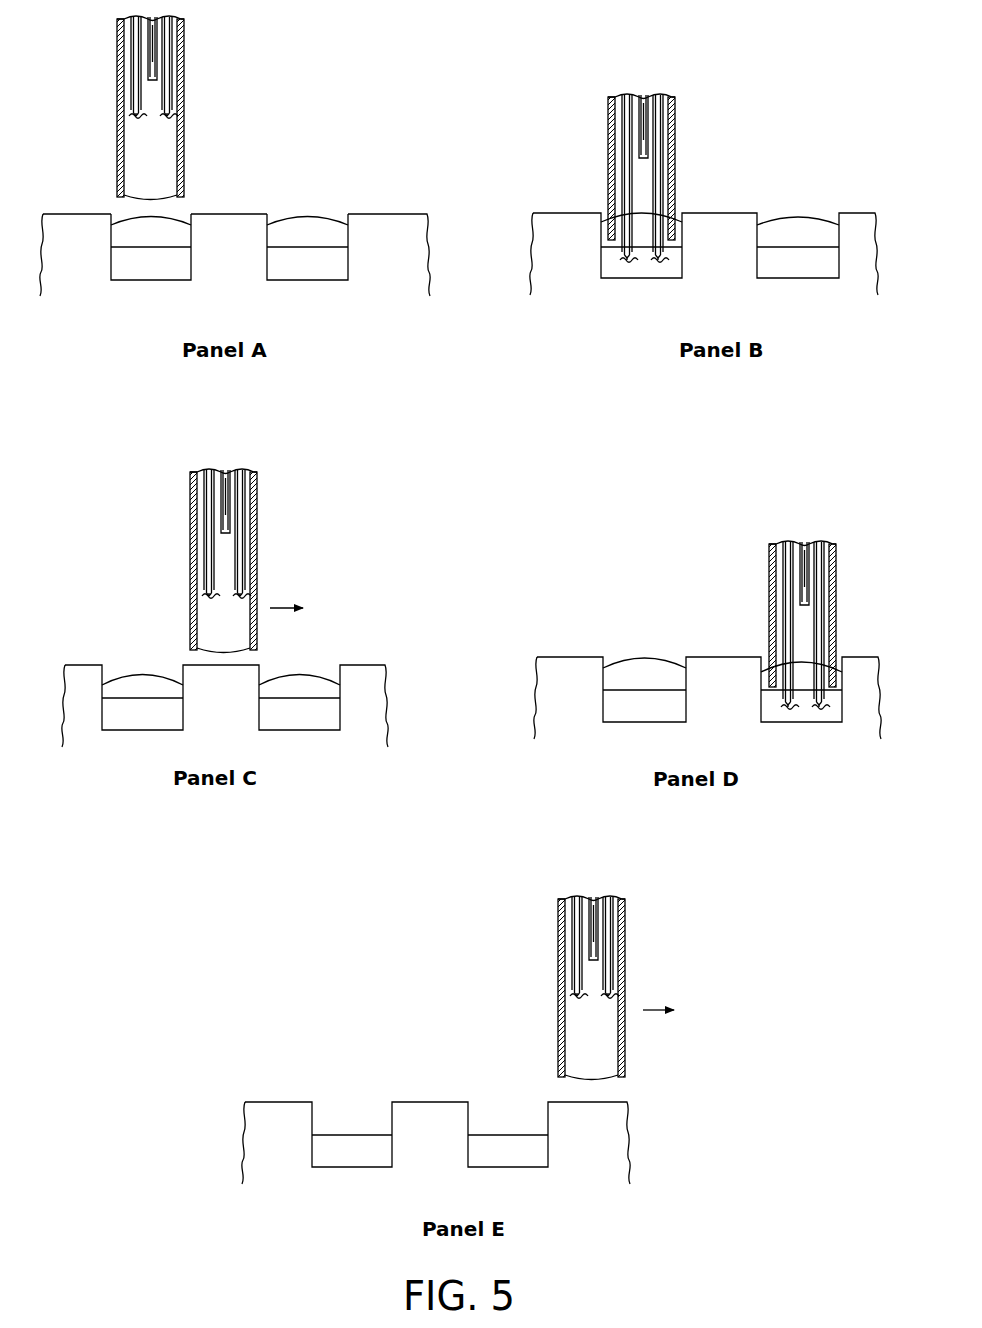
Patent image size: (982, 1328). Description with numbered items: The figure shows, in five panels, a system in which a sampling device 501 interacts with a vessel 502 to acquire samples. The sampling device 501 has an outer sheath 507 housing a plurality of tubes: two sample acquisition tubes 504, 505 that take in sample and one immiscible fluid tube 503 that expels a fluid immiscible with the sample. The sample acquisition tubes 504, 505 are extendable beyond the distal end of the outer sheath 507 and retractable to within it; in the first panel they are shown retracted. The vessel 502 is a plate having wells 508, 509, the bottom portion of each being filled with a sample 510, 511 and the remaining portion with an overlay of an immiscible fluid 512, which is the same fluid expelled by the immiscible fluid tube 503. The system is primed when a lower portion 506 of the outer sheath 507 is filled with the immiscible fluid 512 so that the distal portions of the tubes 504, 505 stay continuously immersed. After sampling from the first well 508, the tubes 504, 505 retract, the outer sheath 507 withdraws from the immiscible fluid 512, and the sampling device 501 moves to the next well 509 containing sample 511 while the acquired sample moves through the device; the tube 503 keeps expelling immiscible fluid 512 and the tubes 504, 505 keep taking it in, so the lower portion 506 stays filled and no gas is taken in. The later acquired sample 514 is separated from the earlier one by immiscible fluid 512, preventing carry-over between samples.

The sampling device 501 is at (212, 90).
The vessel 502 is at (424, 290).
The immiscible fluid tube 503 is at (194, 47).
The sample acquisition tube 504 is at (202, 66).
The sample acquisition tube 505 is at (102, 66).
The lower portion of the outer sheath 506 is at (182, 173).
The outer sheath 507 is at (153, 108).
The well 508 is at (123, 282).
The well 509 is at (332, 282).
The sample 510 is at (185, 268).
The sample 511 is at (340, 265).
The immiscible fluid 512 is at (184, 234).
The acquired sample 514 is at (590, 969).